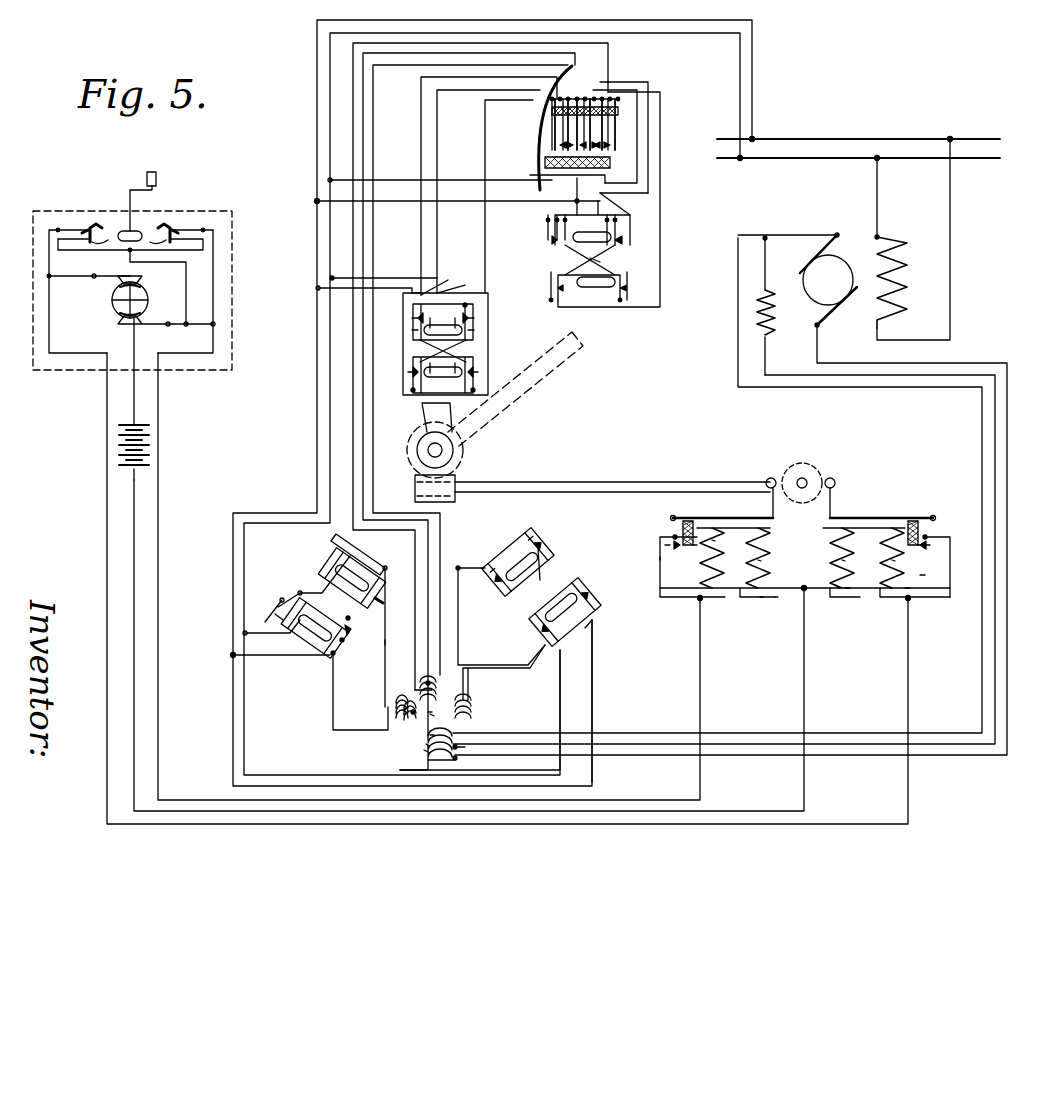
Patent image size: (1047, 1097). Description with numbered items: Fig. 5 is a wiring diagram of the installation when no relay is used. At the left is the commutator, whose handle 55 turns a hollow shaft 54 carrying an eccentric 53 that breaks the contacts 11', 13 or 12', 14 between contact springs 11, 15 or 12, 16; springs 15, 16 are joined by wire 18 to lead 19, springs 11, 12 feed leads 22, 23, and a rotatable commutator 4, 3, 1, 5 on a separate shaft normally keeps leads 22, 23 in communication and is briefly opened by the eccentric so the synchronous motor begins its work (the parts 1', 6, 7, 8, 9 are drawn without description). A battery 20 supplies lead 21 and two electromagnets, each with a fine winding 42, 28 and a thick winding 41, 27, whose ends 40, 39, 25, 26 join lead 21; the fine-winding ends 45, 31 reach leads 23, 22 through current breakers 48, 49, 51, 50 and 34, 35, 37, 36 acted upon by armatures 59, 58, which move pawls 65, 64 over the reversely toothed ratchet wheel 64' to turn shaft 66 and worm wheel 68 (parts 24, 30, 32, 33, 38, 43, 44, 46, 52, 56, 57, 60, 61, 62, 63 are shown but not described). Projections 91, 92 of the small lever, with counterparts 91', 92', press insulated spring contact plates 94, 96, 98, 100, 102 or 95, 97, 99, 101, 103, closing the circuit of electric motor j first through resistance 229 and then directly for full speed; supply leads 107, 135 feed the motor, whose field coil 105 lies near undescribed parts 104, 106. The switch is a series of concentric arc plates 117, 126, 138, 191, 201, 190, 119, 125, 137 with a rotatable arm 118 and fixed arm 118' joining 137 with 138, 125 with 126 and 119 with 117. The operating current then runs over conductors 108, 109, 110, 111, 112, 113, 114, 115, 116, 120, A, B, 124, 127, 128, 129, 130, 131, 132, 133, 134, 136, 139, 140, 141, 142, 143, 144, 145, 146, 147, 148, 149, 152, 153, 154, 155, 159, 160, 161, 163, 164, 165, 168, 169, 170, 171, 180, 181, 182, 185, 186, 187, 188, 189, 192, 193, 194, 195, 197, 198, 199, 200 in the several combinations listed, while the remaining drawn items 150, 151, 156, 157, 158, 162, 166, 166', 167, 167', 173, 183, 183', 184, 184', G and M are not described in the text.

The commutator disk 1 is at (136, 300).
The controller unit 1' is at (144, 290).
The rotatable commutator member 3 is at (118, 302).
The rotatable commutator member 4 is at (142, 280).
The rotatable commutator member 5 is at (144, 322).
The terminal 6 is at (98, 269).
The conductor 7 is at (88, 283).
The terminal 8 is at (78, 282).
The terminal 9 is at (188, 281).
The contact spring 11 is at (74, 224).
The contact 11' is at (97, 225).
The contact spring 12 is at (191, 219).
The contact 12' is at (170, 225).
The contact 13 is at (104, 243).
The contact 14 is at (166, 243).
The contact spring 15 is at (94, 253).
The contact spring 16 is at (167, 243).
The wire 18 is at (169, 286).
The lead 19 is at (186, 303).
The battery 20 is at (150, 445).
The lead 21 is at (134, 556).
The lead 22 is at (917, 622).
The lead 23 is at (709, 633).
The terminal 24 is at (806, 581).
The winding end 25 is at (835, 585).
The winding end 26 is at (852, 603).
The thick winding 27 is at (867, 559).
The fine winding 28 is at (871, 557).
The contact 30 is at (915, 588).
The fine winding end 31 is at (863, 587).
The terminal 32 is at (906, 602).
The contact 33 is at (931, 576).
The current breaker contact 34 is at (935, 551).
The current breaker contact 35 is at (923, 551).
The current breaker contact 36 is at (926, 536).
The current breaker contact 37 is at (941, 527).
The conductor 38 is at (950, 557).
The winding end 39 is at (776, 597).
The winding end 40 is at (758, 605).
The thick winding 41 is at (770, 565).
The fine winding 42 is at (770, 556).
The spring 43 is at (733, 558).
The contact bar 44 is at (805, 588).
The fine winding end 45 is at (752, 600).
The terminal 46 is at (690, 606).
The current breaker contact 48 is at (668, 552).
The current breaker contact 49 is at (693, 551).
The current breaker contact 50 is at (670, 535).
The current breaker contact 51 is at (665, 535).
The conductor 52 is at (660, 557).
The eccentric 53 is at (139, 241).
The shaft 54 is at (129, 206).
The handle 55 is at (153, 176).
The spring 56 is at (878, 555).
The spring 57 is at (722, 562).
The armature 58 is at (880, 518).
The armature 59 is at (726, 518).
The insulating block 60 is at (913, 520).
The insulating block 61 is at (690, 520).
The pivot 62 is at (936, 509).
The pivot 63 is at (672, 509).
The pawl 64 is at (842, 489).
The ratchet wheel 64' is at (810, 474).
The pawl 65 is at (771, 477).
The shaft 66 is at (590, 481).
The worm wheel 68 is at (460, 452).
The projection 91 is at (446, 378).
The contact 91' is at (447, 320).
The projection 92 is at (426, 378).
The contact 92' is at (427, 320).
The contact plate 94 is at (460, 393).
The contact plate 95 is at (399, 393).
The contact plate 96 is at (476, 376).
The contact plate 97 is at (408, 378).
The contact plate 98 is at (470, 301).
The contact plate 99 is at (443, 319).
The contact plate 100 is at (476, 318).
The contact plate 101 is at (412, 330).
The contact plate 102 is at (476, 330).
The contact plate 103 is at (412, 318).
The conductor 104 is at (950, 237).
The field coil 105 is at (900, 282).
The conductor 106 is at (877, 208).
The motor supply lead 107 is at (893, 133).
The circuit conductor 108 is at (754, 138).
The circuit conductor 109 is at (317, 95).
The circuit conductor 110 is at (318, 289).
The circuit conductor 111 is at (399, 295).
The circuit conductor 112 is at (443, 335).
The circuit conductor 113 is at (492, 103).
The circuit conductor 114 is at (552, 112).
The circuit conductor 115 is at (563, 122).
The circuit conductor 116 is at (500, 60).
The switch plate 117 is at (430, 678).
The rotatable arm 118 is at (446, 717).
The fixed arm 118' is at (449, 731).
The switch plate 119 is at (427, 762).
The circuit conductor 120 is at (817, 355).
The circuit conductor 124 is at (803, 375).
The switch plate 125 is at (424, 750).
The switch plate 126 is at (437, 690).
The circuit conductor 127 is at (550, 60).
The circuit conductor 128 is at (600, 112).
The circuit conductor 129 is at (545, 165).
The circuit conductor 130 is at (492, 93).
The circuit conductor 131 is at (415, 279).
The circuit conductor 132 is at (346, 270).
The circuit conductor 133 is at (330, 102).
The circuit conductor 134 is at (740, 159).
The motor supply lead 135 is at (853, 158).
The circuit conductor 136 is at (738, 297).
The switch plate 137 is at (426, 744).
The switch plate 138 is at (494, 681).
The circuit conductor 139 is at (575, 32).
The circuit conductor 140 is at (600, 140).
The circuit conductor 141 is at (600, 130).
The circuit conductor 142 is at (470, 82).
The circuit conductor 143 is at (447, 279).
The circuit conductor 144 is at (461, 284).
The circuit conductor 145 is at (426, 414).
The circuit conductor 146 is at (443, 374).
The circuit conductor 147 is at (317, 203).
The circuit conductor 148 is at (392, 199).
The circuit conductor 149 is at (548, 236).
The contact 150 is at (552, 243).
The relay 151 is at (592, 223).
The circuit conductor 152 is at (620, 95).
The circuit conductor 153 is at (600, 118).
The circuit conductor 154 is at (568, 132).
The circuit conductor 155 is at (588, 80).
The contact 156 is at (551, 288).
The contact 157 is at (577, 291).
The link 158 is at (598, 258).
The circuit conductor 159 is at (598, 260).
The circuit conductor 160 is at (630, 216).
The circuit conductor 161 is at (440, 171).
The contact 162 is at (548, 224).
The circuit conductor 163 is at (588, 196).
The circuit conductor 164 is at (636, 204).
The circuit conductor 165 is at (612, 150).
The relay armature 166 is at (596, 275).
The contact 166' is at (632, 230).
The relay 167 is at (585, 280).
The relay armature 167' is at (591, 234).
The circuit conductor 168 is at (585, 260).
The circuit conductor 169 is at (606, 294).
The circuit conductor 170 is at (622, 290).
The circuit conductor 171 is at (625, 242).
The conduit 173 is at (545, 365).
The circuit conductor 180 is at (432, 716).
The circuit conductor 181 is at (232, 656).
The circuit conductor 182 is at (276, 656).
The relay 183 is at (315, 628).
The relay 183' is at (352, 578).
The relay armature 184 is at (319, 628).
The relay armature 184' is at (359, 578).
The circuit conductor 185 is at (350, 618).
The circuit conductor 186 is at (352, 630).
The circuit conductor 187 is at (345, 642).
The circuit conductor 188 is at (332, 656).
The circuit conductor 189 is at (496, 674).
The switch plate 190 is at (422, 705).
The switch plate 191 is at (400, 703).
The circuit conductor 192 is at (385, 645).
The circuit conductor 193 is at (398, 625).
The circuit conductor 194 is at (375, 605).
The circuit conductor 195 is at (365, 554).
The circuit conductor 197 is at (324, 575).
The circuit conductor 198 is at (278, 620).
The circuit conductor 199 is at (271, 614).
The circuit conductor 200 is at (340, 672).
The switch plate 201 is at (406, 700).
The resistance 229 is at (772, 320).
The motor terminal A is at (850, 296).
The motor terminal B is at (815, 258).
The coil G is at (446, 744).
The brush M is at (550, 128).
The electric motor j is at (828, 280).